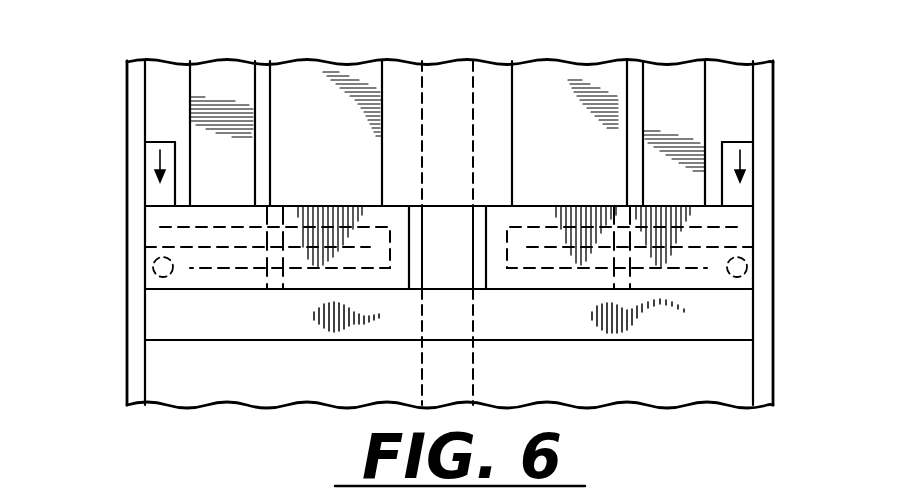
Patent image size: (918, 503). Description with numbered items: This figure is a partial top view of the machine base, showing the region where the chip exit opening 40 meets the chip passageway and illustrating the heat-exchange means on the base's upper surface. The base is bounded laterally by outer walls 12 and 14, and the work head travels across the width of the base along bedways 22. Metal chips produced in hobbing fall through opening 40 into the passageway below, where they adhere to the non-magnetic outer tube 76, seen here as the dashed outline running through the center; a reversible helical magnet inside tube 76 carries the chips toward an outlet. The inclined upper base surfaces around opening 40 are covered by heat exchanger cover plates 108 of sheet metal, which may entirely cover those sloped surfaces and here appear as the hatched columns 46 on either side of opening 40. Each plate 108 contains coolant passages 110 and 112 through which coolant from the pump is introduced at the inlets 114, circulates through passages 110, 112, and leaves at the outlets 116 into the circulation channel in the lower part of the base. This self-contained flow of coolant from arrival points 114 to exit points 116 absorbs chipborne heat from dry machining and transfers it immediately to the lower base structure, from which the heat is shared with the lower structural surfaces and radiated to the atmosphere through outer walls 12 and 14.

The side surface 12 is at (127, 350).
The side surface 14 is at (775, 355).
The bedways 22 is at (679, 320).
The opening 40 is at (472, 202).
The magazine columns 46 is at (220, 68).
The non-magnetic outer tube 76 is at (420, 370).
The heat exchanger cover plates 108 is at (355, 205).
The coolant passage 110 is at (156, 206).
The coolant passage 112 is at (228, 276).
The inlets 114 is at (158, 141).
The outlets 116 is at (152, 272).